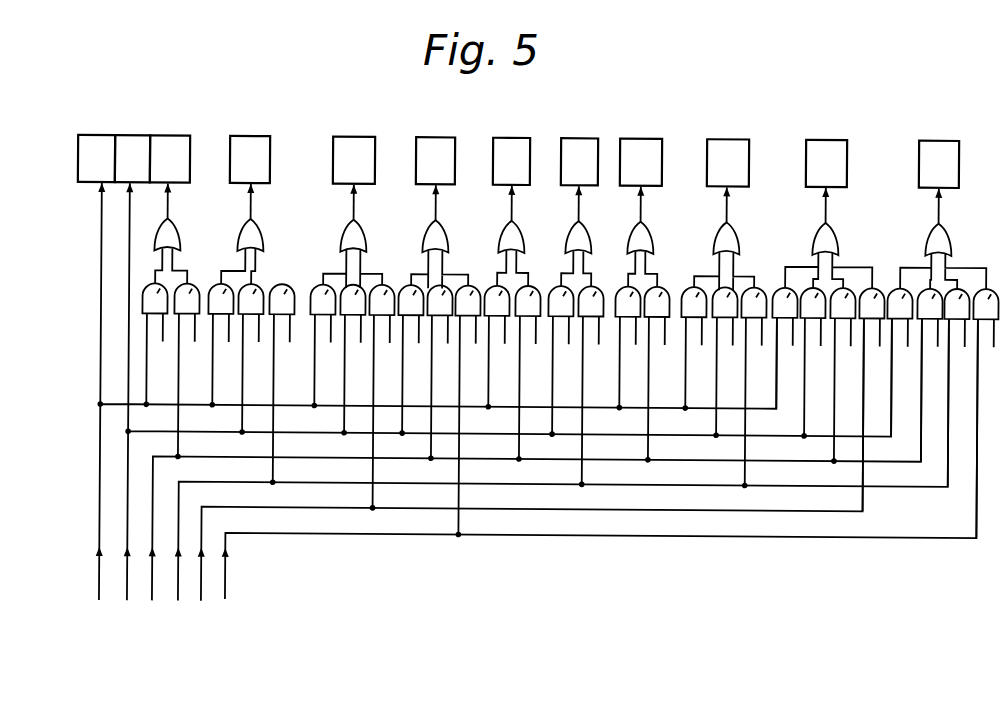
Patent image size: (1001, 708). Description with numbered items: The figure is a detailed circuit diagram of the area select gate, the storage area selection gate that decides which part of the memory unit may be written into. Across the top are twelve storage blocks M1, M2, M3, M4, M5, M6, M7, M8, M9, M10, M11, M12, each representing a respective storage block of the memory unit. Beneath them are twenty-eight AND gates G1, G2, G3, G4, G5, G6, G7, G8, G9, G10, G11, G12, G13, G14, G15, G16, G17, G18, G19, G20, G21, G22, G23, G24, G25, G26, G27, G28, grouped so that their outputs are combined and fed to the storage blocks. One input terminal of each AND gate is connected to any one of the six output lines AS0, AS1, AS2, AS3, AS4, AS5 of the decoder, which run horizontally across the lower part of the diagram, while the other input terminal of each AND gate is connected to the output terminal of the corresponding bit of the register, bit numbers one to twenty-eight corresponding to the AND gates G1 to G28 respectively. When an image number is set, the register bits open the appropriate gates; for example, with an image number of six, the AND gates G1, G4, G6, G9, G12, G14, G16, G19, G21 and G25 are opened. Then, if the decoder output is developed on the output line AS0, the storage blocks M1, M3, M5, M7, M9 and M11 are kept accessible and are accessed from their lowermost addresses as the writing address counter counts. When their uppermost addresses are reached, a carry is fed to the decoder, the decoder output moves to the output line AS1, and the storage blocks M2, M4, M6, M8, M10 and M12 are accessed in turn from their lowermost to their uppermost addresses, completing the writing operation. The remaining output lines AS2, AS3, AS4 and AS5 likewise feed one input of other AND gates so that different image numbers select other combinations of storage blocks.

The storage block M1 is at (96, 163).
The storage block M2 is at (132, 163).
The storage block M3 is at (169, 209).
The storage block M4 is at (245, 210).
The storage block M5 is at (353, 212).
The storage block M6 is at (440, 212).
The storage block M7 is at (511, 212).
The storage block M8 is at (579, 212).
The storage block M9 is at (640, 213).
The storage block M10 is at (724, 214).
The storage block M11 is at (829, 214).
The storage block M12 is at (943, 215).
The AND gate G1 is at (155, 345).
The AND gate G2 is at (186, 372).
The AND gate G3 is at (221, 346).
The AND gate G4 is at (251, 359).
The AND gate G5 is at (281, 384).
The AND gate G6 is at (323, 346).
The AND gate G7 is at (353, 360).
The AND gate G8 is at (381, 398).
The AND gate G9 is at (411, 360).
The AND gate G10 is at (439, 373).
The AND gate G11 is at (467, 411).
The AND gate G12 is at (497, 348).
The AND gate G13 is at (527, 374).
The AND gate G14 is at (561, 361).
The AND gate G15 is at (590, 386).
The AND gate G16 is at (628, 349).
The AND gate G17 is at (656, 375).
The AND gate G18 is at (694, 349).
The AND gate G19 is at (725, 362).
The AND gate G20 is at (753, 387).
The AND gate G21 is at (785, 348).
The AND gate G22 is at (813, 363).
The AND gate G23 is at (842, 376).
The AND gate G24 is at (871, 399).
The AND gate G25 is at (900, 363).
The AND gate G26 is at (929, 375).
The AND gate G27 is at (956, 388).
The AND gate G28 is at (985, 413).
The output line AS0 is at (102, 600).
The output line AS1 is at (130, 600).
The output line AS2 is at (155, 600).
The output line AS3 is at (181, 600).
The output line AS4 is at (204, 600).
The output line AS5 is at (228, 598).